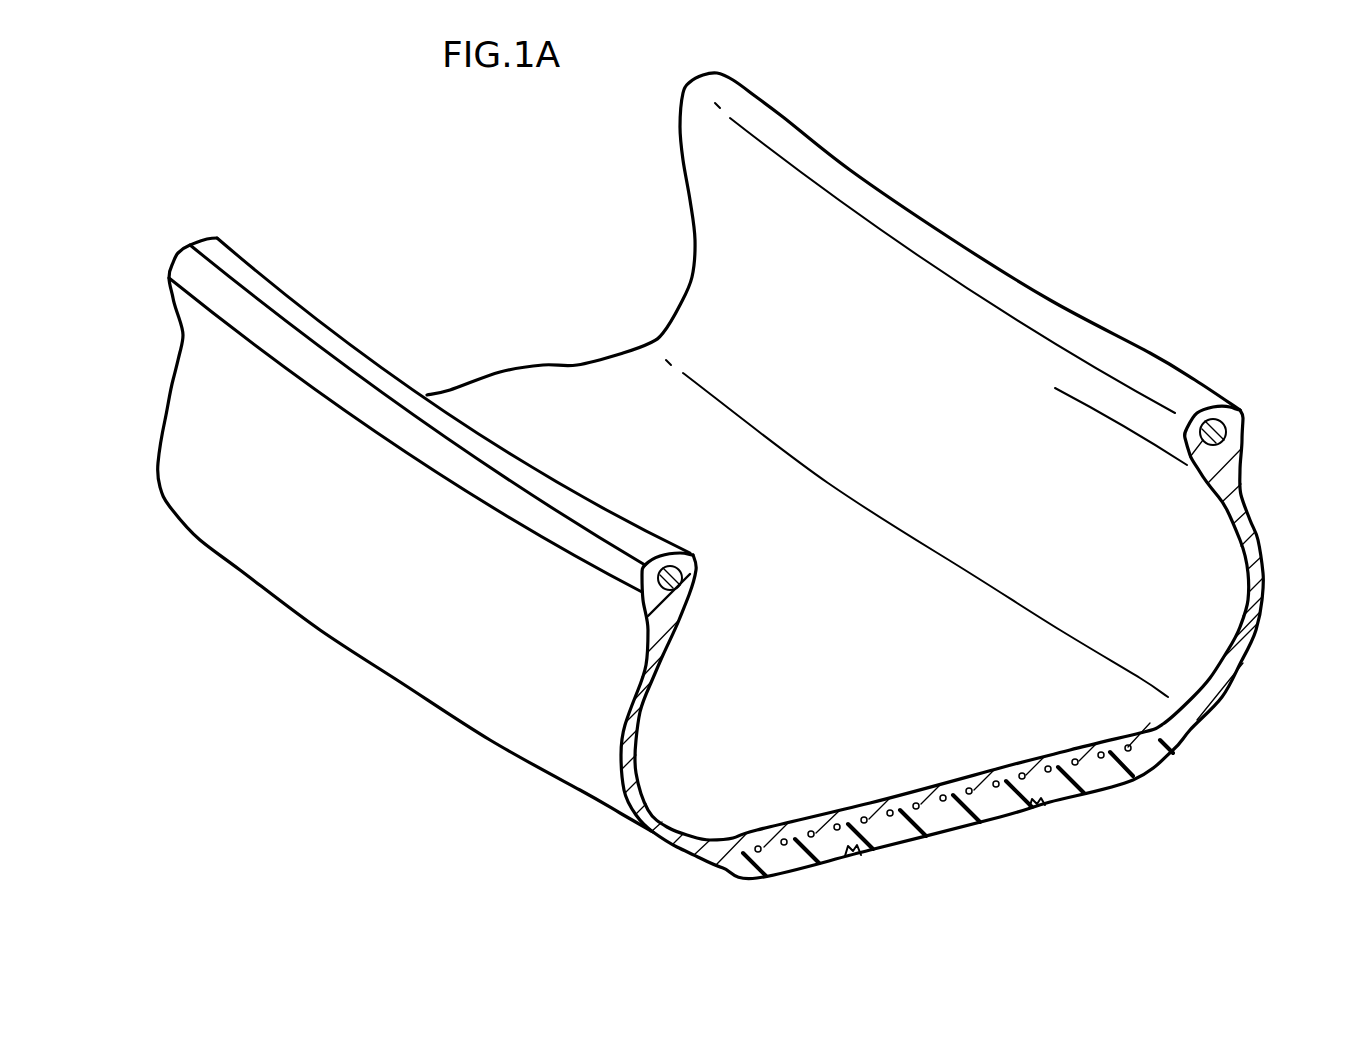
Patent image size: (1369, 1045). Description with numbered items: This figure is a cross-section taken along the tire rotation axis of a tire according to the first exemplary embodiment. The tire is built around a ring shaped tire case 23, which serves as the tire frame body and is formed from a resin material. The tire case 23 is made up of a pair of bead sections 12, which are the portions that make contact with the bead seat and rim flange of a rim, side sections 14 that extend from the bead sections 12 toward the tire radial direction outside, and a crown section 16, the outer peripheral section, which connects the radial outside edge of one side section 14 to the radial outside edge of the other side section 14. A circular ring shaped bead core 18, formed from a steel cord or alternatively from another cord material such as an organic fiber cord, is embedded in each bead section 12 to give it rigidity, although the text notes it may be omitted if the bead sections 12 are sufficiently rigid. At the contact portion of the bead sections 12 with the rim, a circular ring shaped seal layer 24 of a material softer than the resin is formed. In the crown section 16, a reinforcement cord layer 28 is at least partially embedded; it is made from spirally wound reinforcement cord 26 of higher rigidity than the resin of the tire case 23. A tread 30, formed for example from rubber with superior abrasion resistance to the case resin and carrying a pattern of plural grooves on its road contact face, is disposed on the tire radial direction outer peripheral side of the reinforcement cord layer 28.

The bead section 12 is at (1175, 383).
The side section 14 is at (623, 728).
The crown section 16 is at (1063, 747).
The bead core 18 is at (701, 563).
The tire case 23 is at (1220, 704).
The seal layer 24 is at (533, 483).
The reinforcement cord 26 is at (758, 846).
The reinforcement cord layer 28 is at (764, 857).
The tread 30 is at (1055, 807).